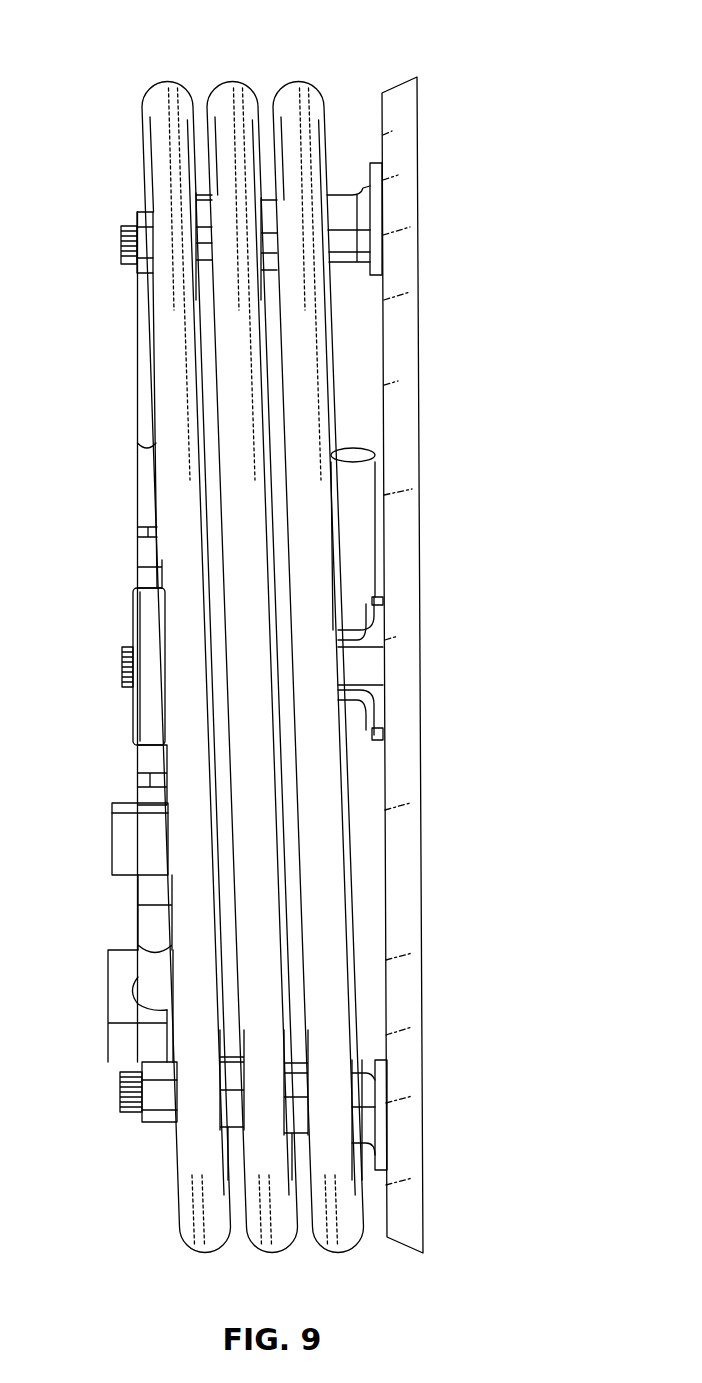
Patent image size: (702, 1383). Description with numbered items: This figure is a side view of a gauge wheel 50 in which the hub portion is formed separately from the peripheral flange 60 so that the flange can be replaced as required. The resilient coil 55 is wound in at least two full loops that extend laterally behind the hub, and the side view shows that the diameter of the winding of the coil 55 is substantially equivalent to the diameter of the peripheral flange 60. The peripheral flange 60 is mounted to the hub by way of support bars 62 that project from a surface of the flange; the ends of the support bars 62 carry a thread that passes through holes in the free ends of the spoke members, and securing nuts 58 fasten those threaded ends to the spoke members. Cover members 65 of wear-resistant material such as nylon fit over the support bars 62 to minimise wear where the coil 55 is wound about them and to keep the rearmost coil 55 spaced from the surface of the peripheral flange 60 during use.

The gauge wheel 50 is at (487, 47).
The resilient coil 55 is at (228, 92).
The securing nuts 58 is at (158, 1118).
The peripheral flange 60 is at (410, 1132).
The support bars 62 is at (126, 246).
The cover members 65 is at (330, 200).